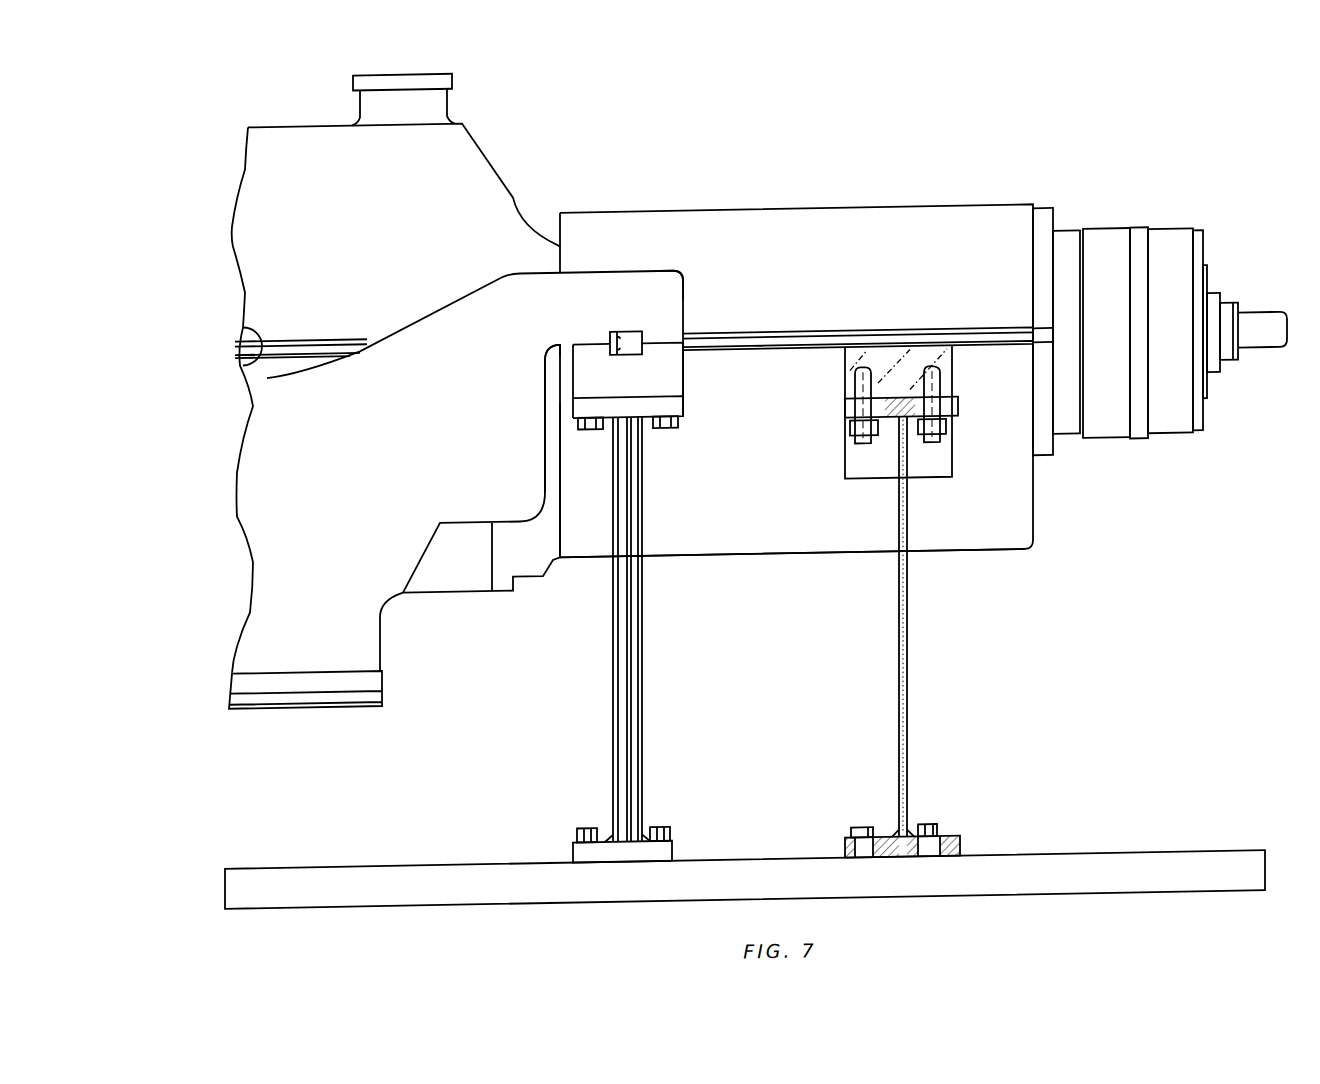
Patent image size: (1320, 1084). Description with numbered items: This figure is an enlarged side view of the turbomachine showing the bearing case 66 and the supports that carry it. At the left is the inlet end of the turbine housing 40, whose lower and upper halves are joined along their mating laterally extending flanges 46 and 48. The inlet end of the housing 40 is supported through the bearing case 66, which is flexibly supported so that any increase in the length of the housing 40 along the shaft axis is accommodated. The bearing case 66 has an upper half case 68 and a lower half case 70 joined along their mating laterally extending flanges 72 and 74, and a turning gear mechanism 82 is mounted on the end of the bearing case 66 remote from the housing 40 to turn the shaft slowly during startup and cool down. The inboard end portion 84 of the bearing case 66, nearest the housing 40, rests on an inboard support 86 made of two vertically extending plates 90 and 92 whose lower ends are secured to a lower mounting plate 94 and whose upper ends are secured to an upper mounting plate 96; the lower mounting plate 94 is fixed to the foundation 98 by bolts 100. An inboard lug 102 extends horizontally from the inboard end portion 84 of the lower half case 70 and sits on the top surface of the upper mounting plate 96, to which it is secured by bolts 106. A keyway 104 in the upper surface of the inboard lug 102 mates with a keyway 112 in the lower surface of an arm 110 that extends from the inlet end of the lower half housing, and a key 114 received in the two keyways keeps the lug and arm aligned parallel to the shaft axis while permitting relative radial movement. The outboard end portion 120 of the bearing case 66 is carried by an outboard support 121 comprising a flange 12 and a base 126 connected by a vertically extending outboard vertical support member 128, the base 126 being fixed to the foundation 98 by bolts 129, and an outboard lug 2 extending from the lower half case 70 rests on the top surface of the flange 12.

The housing 40 is at (497, 127).
The laterally extending flange 46 is at (245, 357).
The laterally extending flange 48 is at (257, 335).
The bearing case 66 is at (880, 154).
The upper half case 68 is at (925, 211).
The lower half case 70 is at (740, 556).
The laterally extending flange 72 is at (890, 334).
The laterally extending flange 74 is at (812, 350).
The turning gear mechanism 82 is at (1172, 237).
The inboard end portion 84 is at (670, 526).
The inboard support 86 is at (658, 656).
The vertically extending plate 90 is at (613, 707).
The vertically extending plate 92 is at (642, 706).
The lower mounting plate 94 is at (573, 848).
The upper mounting plate 96 is at (683, 405).
The foundation 98 is at (1215, 861).
The bolts 100 is at (577, 827).
The inboard lug 102 is at (683, 376).
The keyway 104 is at (560, 363).
The bolts 106 is at (592, 429).
The arm 110 is at (682, 271).
The keyway 112 is at (610, 339).
The key 114 is at (625, 346).
The outboard end portion 120 is at (958, 534).
The outboard support 121 is at (928, 657).
The base 126 is at (960, 846).
The outboard vertical support member 128 is at (908, 705).
The bolts 129 is at (857, 830).
The outboard lug 2 is at (953, 378).
The flange 12 is at (957, 409).